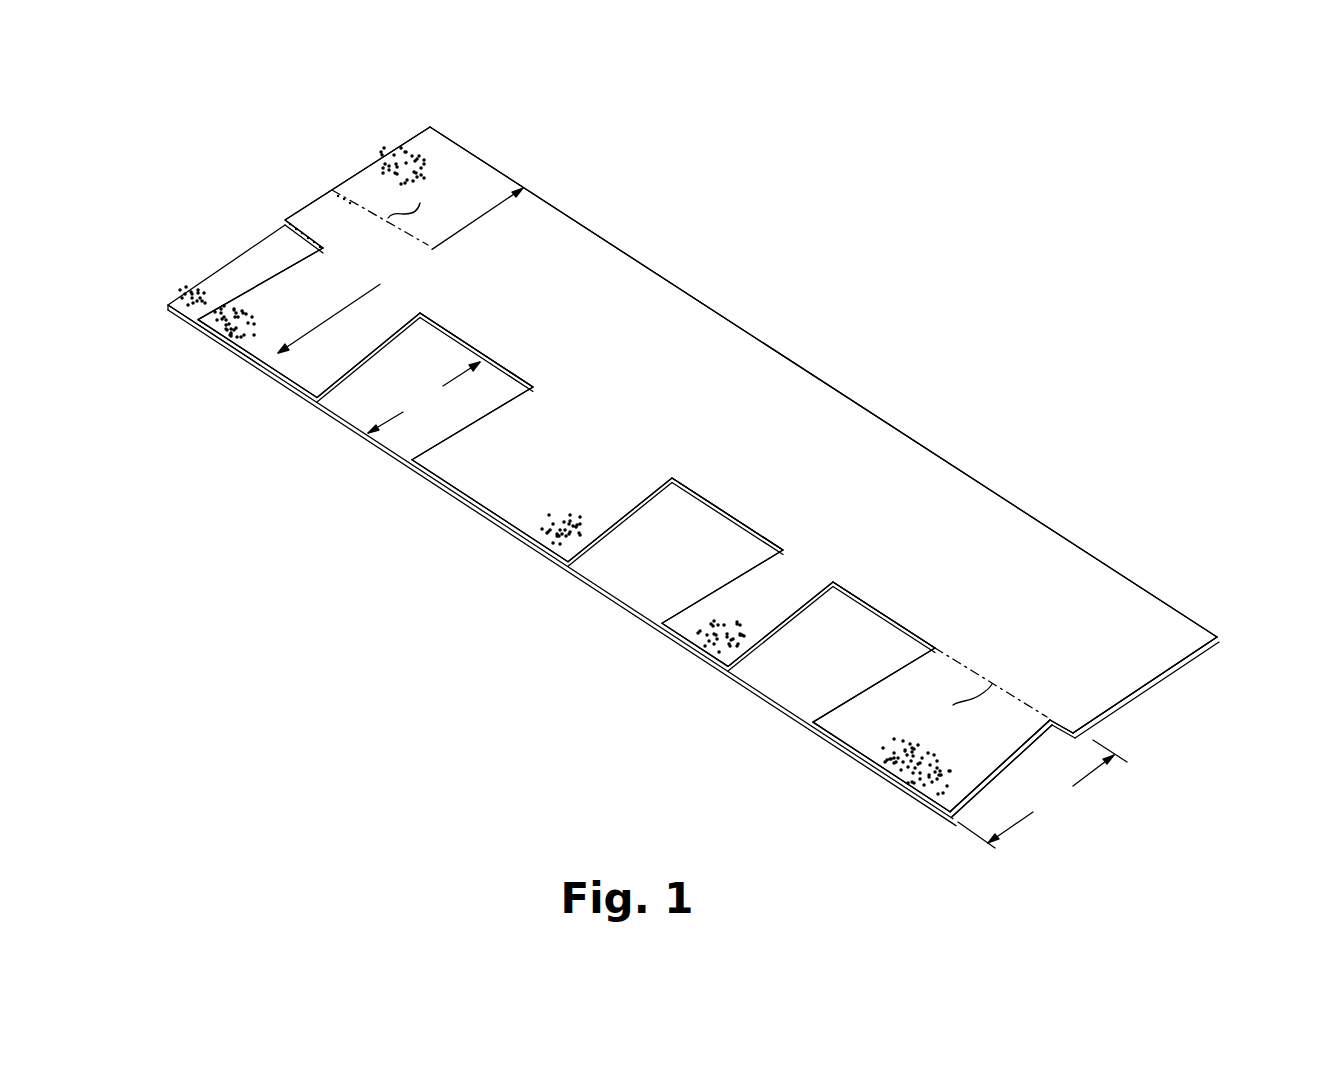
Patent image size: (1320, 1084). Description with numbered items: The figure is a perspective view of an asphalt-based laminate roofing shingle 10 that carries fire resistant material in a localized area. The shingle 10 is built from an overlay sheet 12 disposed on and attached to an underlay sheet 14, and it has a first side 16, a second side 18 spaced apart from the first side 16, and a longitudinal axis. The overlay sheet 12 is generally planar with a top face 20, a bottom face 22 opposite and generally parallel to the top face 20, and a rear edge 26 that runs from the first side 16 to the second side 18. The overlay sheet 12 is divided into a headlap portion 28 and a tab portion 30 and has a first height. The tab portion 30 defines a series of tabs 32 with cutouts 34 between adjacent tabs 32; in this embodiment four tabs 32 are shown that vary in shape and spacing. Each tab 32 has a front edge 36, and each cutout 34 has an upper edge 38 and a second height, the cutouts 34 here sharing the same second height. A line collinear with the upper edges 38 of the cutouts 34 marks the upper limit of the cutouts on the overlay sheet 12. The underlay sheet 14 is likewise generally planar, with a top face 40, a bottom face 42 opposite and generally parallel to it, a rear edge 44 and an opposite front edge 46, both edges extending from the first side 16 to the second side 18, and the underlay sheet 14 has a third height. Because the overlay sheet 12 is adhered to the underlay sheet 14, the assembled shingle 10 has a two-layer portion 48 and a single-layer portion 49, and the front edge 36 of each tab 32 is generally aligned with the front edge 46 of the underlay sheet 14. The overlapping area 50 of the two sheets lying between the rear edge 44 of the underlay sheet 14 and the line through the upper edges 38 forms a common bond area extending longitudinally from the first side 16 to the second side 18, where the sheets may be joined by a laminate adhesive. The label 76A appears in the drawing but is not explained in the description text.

The roofing shingle 10 is at (635, 213).
The overlay sheet 12 is at (1088, 615).
The underlay sheet 14 is at (947, 827).
The first side 16 is at (1135, 719).
The second side 18 is at (252, 227).
The top face 20 is at (533, 253).
The bottom face 22 is at (1168, 678).
The rear edge 26 is at (968, 470).
The headlap portion 28 is at (401, 109).
The tab portion 30 is at (261, 203).
The tabs 32 is at (302, 366).
The cutouts 34 is at (361, 407).
The front edge 36 is at (514, 521).
The upper edge 38 is at (882, 618).
The top face 40 is at (192, 293).
The bottom face 42 is at (175, 313).
The rear edge 44 is at (1097, 740).
The front edge 46 is at (598, 595).
The two-layer portion 48 is at (1024, 869).
The single-layer portion 49 is at (1153, 779).
The overlapping area 50 is at (1073, 730).
The layer 76A is at (940, 559).